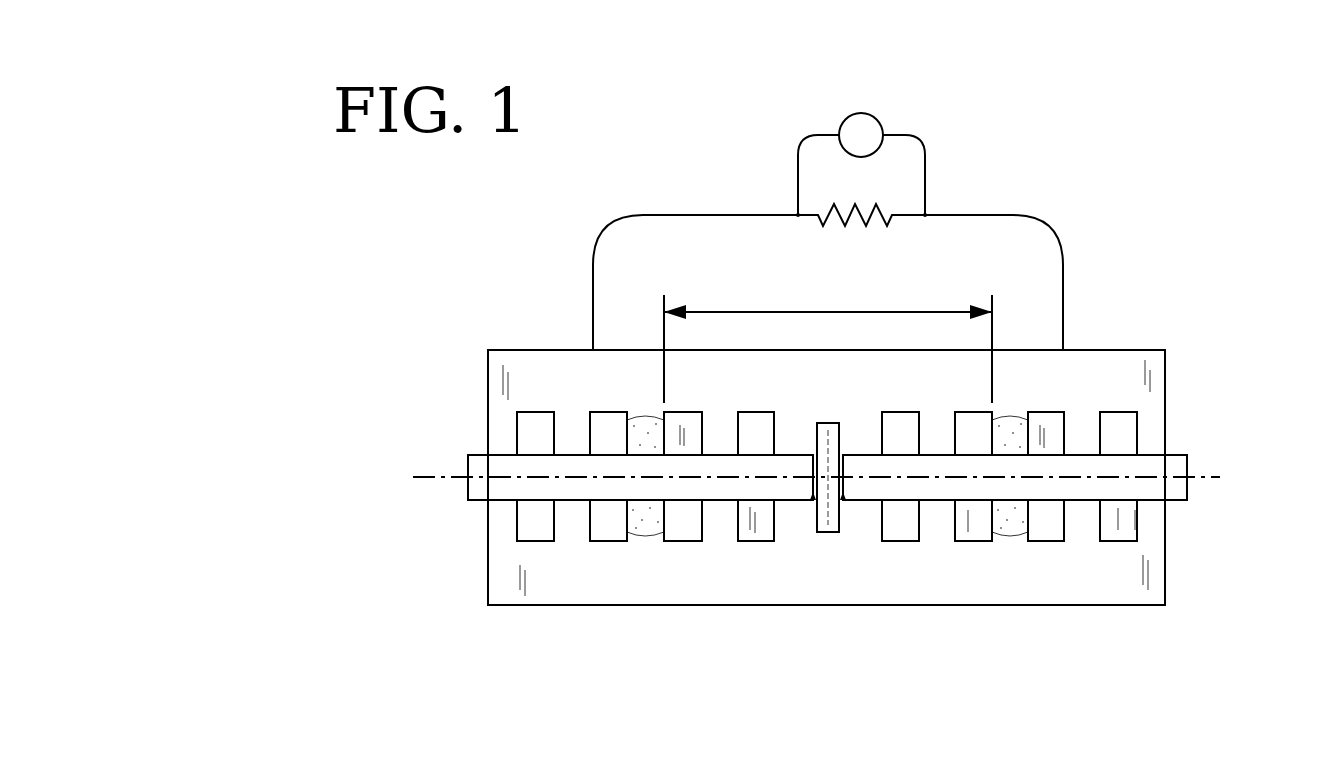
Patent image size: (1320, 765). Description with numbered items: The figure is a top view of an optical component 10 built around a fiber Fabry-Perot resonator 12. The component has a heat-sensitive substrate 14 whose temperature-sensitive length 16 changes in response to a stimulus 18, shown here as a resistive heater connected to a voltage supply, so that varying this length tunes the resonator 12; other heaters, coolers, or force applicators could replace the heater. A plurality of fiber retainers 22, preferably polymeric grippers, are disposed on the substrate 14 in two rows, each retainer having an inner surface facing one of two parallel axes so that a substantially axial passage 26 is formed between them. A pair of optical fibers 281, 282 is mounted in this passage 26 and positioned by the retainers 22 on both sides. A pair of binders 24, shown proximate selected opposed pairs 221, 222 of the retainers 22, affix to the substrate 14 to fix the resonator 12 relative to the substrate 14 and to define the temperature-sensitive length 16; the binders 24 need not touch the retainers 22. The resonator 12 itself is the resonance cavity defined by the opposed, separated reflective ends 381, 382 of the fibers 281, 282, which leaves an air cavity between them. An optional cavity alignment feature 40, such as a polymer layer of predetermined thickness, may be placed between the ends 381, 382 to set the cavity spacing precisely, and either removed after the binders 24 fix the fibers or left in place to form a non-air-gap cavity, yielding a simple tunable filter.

The optical component 10 is at (1220, 132).
The fiber Fabry-Perot resonator 12 is at (839, 416).
The substrate 14 is at (1103, 605).
The variable length 16 is at (820, 312).
The stimuli 18 is at (930, 215).
The fiber retainers 22 is at (903, 533).
The selected opposed pair of fiber retainers 221 is at (707, 440).
The selected opposed pair of fiber retainers 222 is at (962, 440).
The binders 24 is at (641, 532).
The axial passage 26 is at (438, 476).
The optical fiber 281 is at (572, 470).
The optical fiber 282 is at (1175, 468).
The reflective end 381 is at (812, 500).
The reflective end 382 is at (844, 500).
The cavity alignment feature 40 is at (826, 527).